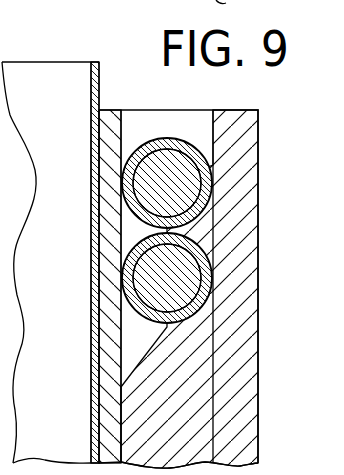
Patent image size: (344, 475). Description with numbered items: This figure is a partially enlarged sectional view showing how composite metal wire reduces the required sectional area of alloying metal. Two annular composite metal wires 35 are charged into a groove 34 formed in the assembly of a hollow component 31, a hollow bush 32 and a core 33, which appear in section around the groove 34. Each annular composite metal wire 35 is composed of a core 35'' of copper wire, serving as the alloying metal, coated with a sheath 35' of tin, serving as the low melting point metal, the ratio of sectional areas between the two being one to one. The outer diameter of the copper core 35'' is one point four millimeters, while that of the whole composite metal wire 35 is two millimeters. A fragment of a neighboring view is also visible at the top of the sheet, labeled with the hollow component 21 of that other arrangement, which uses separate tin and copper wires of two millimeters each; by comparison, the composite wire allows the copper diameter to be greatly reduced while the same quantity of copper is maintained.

The hollow component 21 is at (239, 10).
The hollow component 31 is at (250, 133).
The hollow bush 32 is at (115, 118).
The core 33 is at (96, 62).
The groove 34 is at (140, 341).
The annular composite metal wire 35 is at (212, 230).
The sheath 35' is at (168, 194).
The core 35'' is at (217, 230).